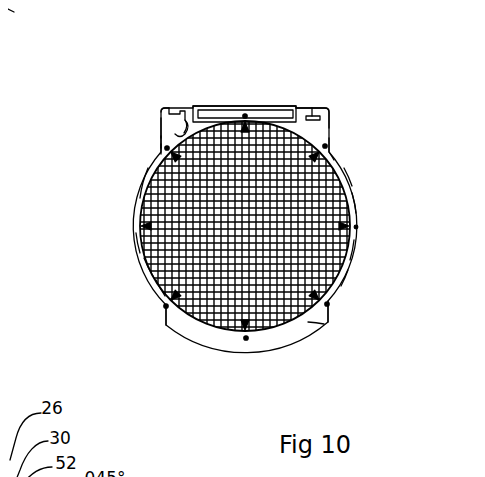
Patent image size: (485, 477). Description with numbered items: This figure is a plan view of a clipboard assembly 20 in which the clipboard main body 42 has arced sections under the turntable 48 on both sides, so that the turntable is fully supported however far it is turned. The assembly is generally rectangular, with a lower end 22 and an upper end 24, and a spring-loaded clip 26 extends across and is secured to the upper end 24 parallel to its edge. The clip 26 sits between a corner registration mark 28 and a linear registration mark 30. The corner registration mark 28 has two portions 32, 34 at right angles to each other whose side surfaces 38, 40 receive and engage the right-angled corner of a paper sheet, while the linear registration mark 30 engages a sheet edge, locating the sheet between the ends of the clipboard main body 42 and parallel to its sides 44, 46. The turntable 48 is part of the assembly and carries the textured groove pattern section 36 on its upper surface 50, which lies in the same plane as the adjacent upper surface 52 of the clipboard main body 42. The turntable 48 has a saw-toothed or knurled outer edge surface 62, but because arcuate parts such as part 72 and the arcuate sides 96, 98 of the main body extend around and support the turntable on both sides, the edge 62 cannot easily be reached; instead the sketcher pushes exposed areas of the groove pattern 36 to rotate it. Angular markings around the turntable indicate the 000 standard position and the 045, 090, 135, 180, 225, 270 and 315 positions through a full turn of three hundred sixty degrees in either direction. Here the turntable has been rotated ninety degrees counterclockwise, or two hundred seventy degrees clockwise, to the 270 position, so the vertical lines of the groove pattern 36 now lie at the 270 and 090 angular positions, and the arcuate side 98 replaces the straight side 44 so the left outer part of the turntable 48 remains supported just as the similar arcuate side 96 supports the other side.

The clipboard assembly 20 is at (157, 130).
The lower end 22 is at (280, 332).
The upper end 24 is at (182, 98).
The spring-loaded clip 26 is at (302, 100).
The corner registration mark 28 is at (154, 106).
The linear registration mark 30 is at (312, 107).
The portion of registration mark 32 is at (165, 124).
The portion of registration mark 34 is at (157, 134).
The textured groove pattern section 36 is at (142, 172).
The side surface 38 is at (161, 129).
The side surface 40 is at (160, 139).
The clipboard main body 42 is at (323, 141).
The side of clipboard main body 44 is at (157, 310).
The side of clipboard main body 46 is at (322, 305).
The turntable 48 is at (340, 170).
The upper surface of turntable 50 is at (146, 262).
The upper surface of clipboard main body 52 is at (312, 106).
The knurled outer edge surface 62 is at (155, 276).
The arcuate part of clipboard main body 72 is at (345, 182).
The arcuate side 96 is at (347, 247).
The arcuate side 98 is at (135, 238).
The standard position 000 is at (240, 107).
The 045 degree marker 045 is at (313, 149).
The angular position 090 is at (345, 218).
The 135 degree marker 135 is at (166, 151).
The 180 degree marker 180 is at (237, 110).
The 225 degree marker 225 is at (318, 136).
The rotated position 270 is at (136, 219).
The 315 degree marker 315 is at (157, 139).